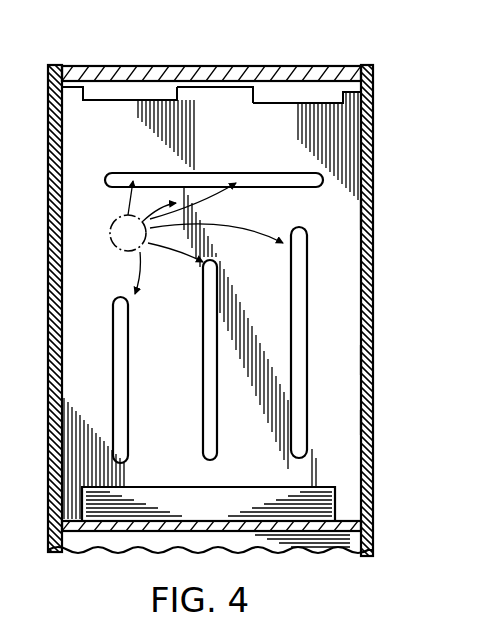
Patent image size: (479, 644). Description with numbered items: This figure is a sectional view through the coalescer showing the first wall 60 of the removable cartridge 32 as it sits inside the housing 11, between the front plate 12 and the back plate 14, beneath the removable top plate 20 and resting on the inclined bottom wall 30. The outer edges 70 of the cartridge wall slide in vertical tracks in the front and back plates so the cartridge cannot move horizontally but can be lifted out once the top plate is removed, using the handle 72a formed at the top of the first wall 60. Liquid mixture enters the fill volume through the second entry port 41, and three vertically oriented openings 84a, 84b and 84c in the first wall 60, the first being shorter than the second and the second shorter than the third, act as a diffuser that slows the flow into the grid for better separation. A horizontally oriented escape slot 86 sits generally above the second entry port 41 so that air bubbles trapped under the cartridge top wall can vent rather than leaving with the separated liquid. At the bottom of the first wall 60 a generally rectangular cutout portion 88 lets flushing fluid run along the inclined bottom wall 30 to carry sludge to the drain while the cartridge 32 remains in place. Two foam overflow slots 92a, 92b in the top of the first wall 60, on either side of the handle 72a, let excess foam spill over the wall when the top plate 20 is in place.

The housing 11 is at (374, 302).
The front plate 12 is at (372, 360).
The back plate 14 is at (50, 350).
The removable top plate 20 is at (167, 76).
The inclined bottom wall 30 is at (107, 556).
The removable cartridge 32 is at (297, 100).
The second entry port 41 is at (112, 252).
The first wall 60 is at (341, 216).
The outer edges 70 is at (372, 420).
The handle 72a is at (224, 98).
The vertically oriented opening 84a is at (122, 355).
The vertically oriented opening 84b is at (204, 413).
The vertically oriented opening 84c is at (306, 312).
The escape slot 86 is at (207, 174).
The cutout portion 88 is at (177, 487).
The foam overflow slot 92a is at (325, 103).
The foam overflow slot 92b is at (108, 103).